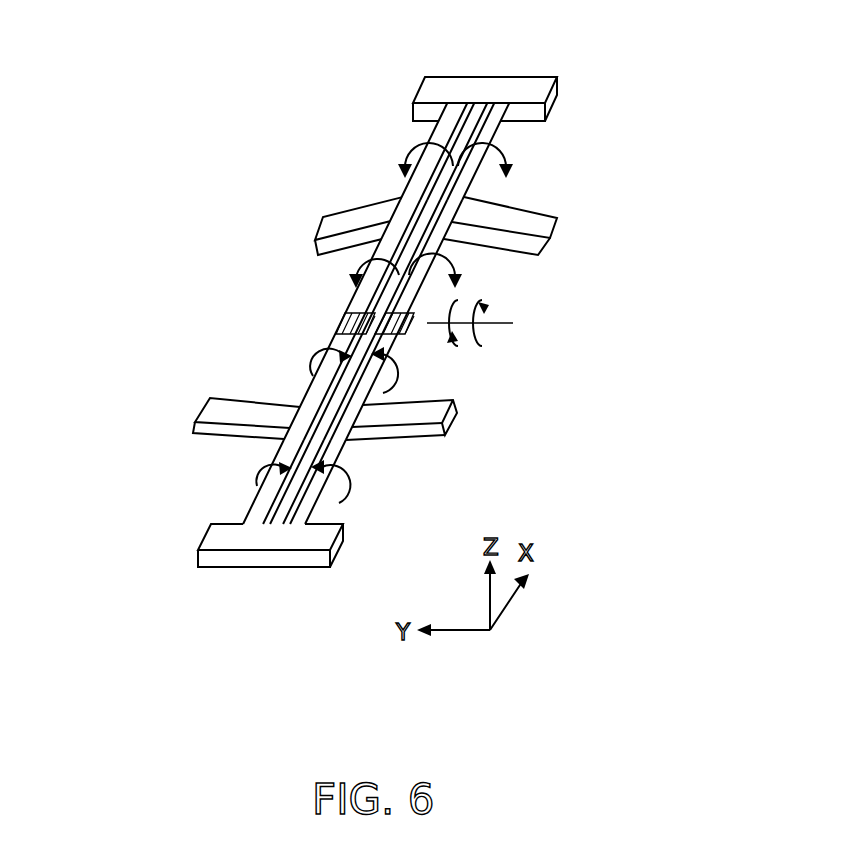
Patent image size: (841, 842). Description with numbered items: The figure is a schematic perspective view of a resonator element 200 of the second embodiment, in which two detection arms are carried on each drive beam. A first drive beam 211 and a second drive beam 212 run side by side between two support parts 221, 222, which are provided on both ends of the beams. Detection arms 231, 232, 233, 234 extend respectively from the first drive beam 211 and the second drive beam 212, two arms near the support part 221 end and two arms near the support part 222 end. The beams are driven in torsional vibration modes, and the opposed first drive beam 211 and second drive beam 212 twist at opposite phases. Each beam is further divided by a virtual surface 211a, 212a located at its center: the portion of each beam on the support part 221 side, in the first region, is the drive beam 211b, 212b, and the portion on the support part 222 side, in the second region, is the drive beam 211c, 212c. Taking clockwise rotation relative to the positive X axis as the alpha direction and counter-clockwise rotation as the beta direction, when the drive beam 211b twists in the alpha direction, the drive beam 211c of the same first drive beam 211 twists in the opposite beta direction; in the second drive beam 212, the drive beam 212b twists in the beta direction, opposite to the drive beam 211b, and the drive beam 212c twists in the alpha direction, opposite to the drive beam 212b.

The resonator element 200 is at (290, 96).
The first drive beam 211 is at (489, 313).
The virtual surface 211a is at (384, 317).
The drive beam at the support part 221 side 211b is at (470, 119).
The drive beam at the support part 222 side 211c is at (472, 482).
The second drive beam 212 is at (252, 316).
The virtual surface 212a is at (347, 327).
The drive beam at the support part 221 side 212b is at (446, 121).
The drive beam at the support part 222 side 212c is at (209, 482).
The support part 221 is at (481, 105).
The support part 222 is at (272, 545).
The detection arm 231 is at (535, 221).
The detection arm 232 is at (342, 219).
The detection arm 233 is at (439, 407).
The detection arm 234 is at (232, 407).